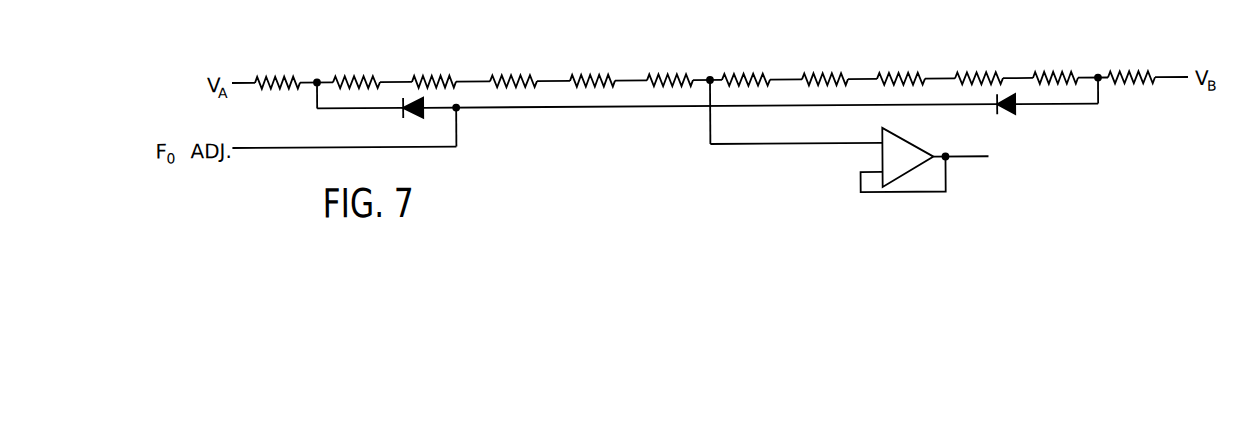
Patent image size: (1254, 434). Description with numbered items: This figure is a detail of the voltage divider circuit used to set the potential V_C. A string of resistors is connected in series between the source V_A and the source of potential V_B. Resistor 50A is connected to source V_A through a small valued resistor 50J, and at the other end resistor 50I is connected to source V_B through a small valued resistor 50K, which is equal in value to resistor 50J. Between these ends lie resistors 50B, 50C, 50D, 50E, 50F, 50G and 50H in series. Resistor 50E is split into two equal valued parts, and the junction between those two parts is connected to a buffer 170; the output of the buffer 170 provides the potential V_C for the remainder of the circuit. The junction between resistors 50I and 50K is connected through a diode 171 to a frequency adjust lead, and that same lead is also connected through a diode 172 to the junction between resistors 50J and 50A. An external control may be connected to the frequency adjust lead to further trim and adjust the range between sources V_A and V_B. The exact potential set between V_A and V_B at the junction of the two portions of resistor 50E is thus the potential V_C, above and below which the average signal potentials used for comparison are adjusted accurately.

The small valued resistor 50J is at (277, 69).
The resistor 50A is at (357, 68).
The resistor 50B is at (435, 68).
The resistor 50C is at (513, 67).
The resistor 50D is at (593, 67).
The resistor 50E is at (738, 80).
The resistor 50F is at (825, 65).
The resistor 50G is at (901, 65).
The resistor 50H is at (979, 64).
The resistor 50I is at (1055, 64).
The small valued resistor 50K is at (1132, 63).
The buffer 170 is at (909, 143).
The diode 171 is at (1006, 119).
The diode 172 is at (410, 118).